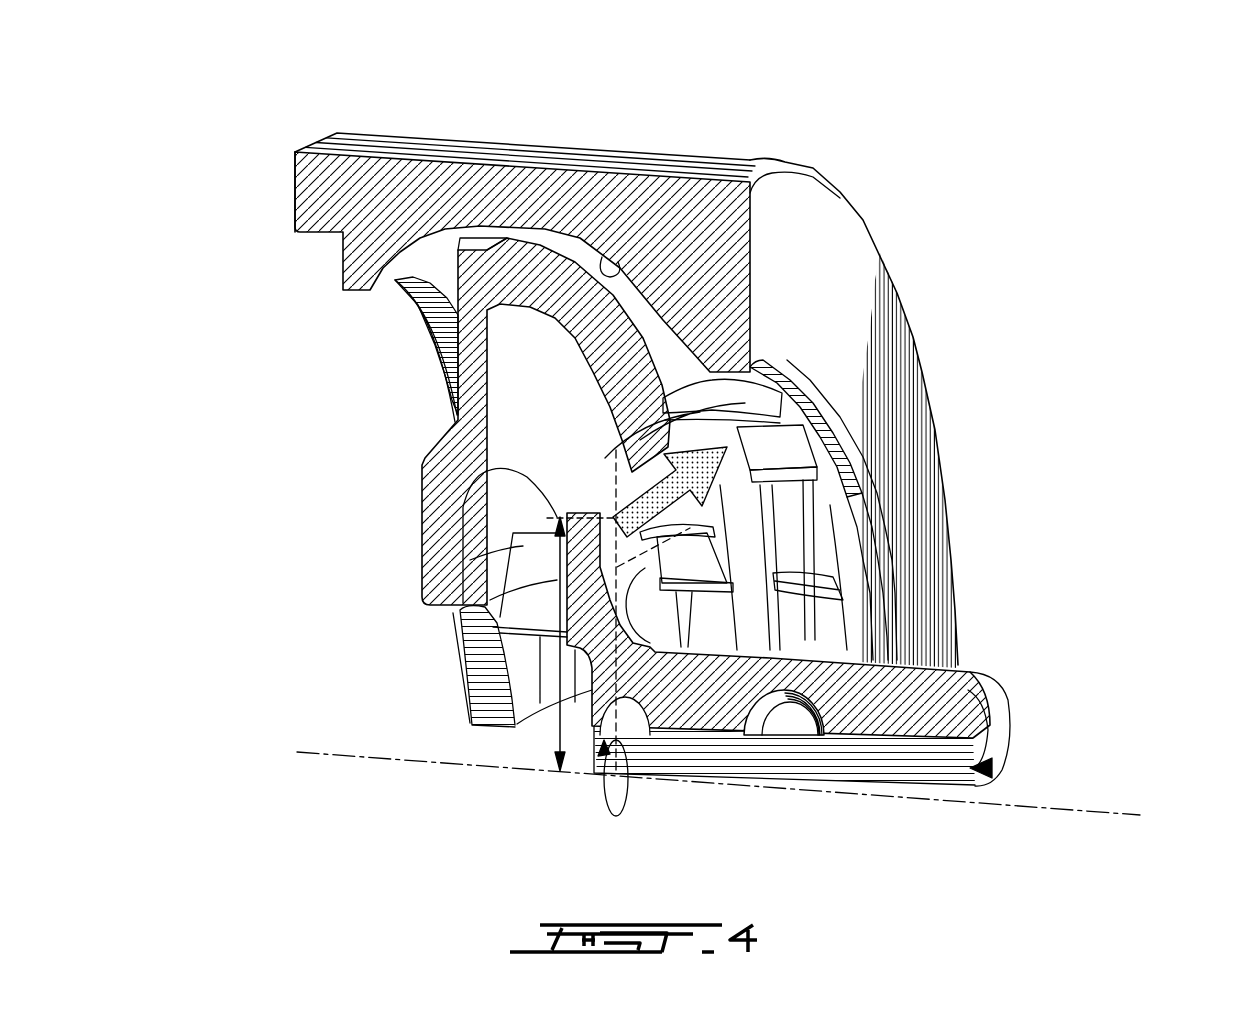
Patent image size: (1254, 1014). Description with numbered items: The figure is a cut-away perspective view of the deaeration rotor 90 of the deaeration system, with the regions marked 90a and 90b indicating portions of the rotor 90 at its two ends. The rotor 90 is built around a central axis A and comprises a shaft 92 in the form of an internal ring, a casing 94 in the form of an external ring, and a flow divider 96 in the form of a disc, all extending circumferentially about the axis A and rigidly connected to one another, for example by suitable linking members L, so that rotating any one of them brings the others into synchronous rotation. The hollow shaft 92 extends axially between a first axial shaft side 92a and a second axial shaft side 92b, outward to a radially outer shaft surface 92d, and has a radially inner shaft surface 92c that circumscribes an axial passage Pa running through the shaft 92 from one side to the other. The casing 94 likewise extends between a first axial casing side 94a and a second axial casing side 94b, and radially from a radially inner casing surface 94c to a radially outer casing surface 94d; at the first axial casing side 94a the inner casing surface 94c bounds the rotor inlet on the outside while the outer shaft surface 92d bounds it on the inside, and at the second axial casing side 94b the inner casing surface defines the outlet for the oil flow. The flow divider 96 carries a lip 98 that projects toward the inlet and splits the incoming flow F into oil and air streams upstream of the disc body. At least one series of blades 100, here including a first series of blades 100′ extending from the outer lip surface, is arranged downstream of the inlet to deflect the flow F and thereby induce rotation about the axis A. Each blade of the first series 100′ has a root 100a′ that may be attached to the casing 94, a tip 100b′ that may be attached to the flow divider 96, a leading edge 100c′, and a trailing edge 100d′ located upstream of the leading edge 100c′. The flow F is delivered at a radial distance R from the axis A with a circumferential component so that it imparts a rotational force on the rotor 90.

The rotor 90 is at (1150, 140).
The first portion of seal assembly 90a is at (900, 133).
The second portion of seal assembly 90b is at (246, 142).
The shaft 92 is at (1050, 672).
The first axial shaft side 92a is at (997, 722).
The second axial shaft side 92b is at (470, 610).
The radially inner shaft surface 92c is at (912, 740).
The radially outer shaft surface 92d is at (953, 657).
The casing 94 is at (912, 250).
The first axial casing side 94a is at (857, 310).
The second axial casing side 94b is at (295, 188).
The radially inner casing surface 94c is at (602, 257).
The radially outer casing surface 94d is at (673, 160).
The flow divider 96 is at (395, 511).
The lip 98 is at (585, 333).
The series of blades 100 is at (847, 848).
The first series of blades 100′ is at (814, 648).
The root 100a′ is at (817, 462).
The tip 100b′ is at (648, 469).
The leading edge 100c′ is at (813, 503).
The trailing edge 100d′ is at (783, 412).
The flow F is at (655, 493).
The linking members L is at (530, 562).
The radial distance R is at (553, 733).
The axis A is at (1122, 812).
The axial passage Pa is at (992, 767).